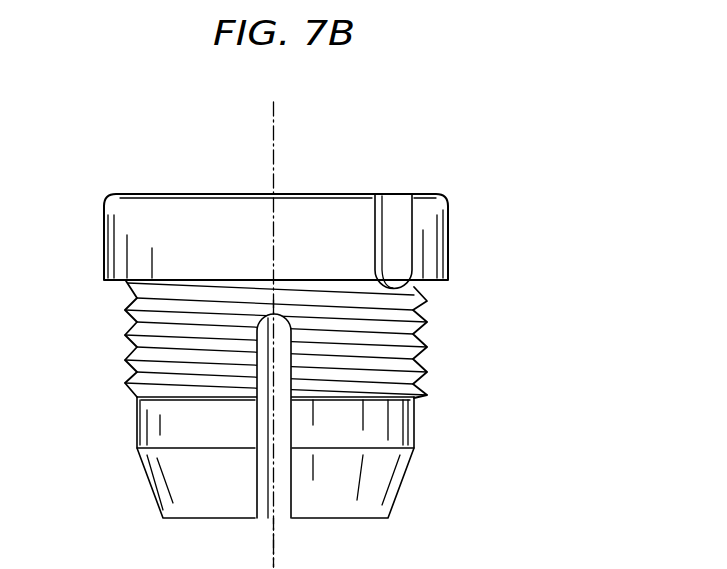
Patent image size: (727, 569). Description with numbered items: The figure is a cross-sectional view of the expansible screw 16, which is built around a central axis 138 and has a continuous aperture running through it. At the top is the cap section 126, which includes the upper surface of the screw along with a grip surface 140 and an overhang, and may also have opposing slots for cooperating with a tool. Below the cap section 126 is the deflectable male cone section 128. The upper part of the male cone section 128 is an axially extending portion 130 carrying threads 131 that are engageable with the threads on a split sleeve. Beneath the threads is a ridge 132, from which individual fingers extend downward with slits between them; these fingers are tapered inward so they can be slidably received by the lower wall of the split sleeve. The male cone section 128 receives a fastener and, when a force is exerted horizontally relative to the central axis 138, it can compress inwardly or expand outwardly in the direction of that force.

The expansible screw 16 is at (512, 88).
The cap section 126 is at (449, 222).
The deflectable male cone section 128 is at (558, 256).
The axially extending portion 130 is at (434, 302).
The threads 131 is at (434, 350).
The ridge 132 is at (415, 434).
The central axis 138 is at (274, 152).
The grip surface 140 is at (112, 244).